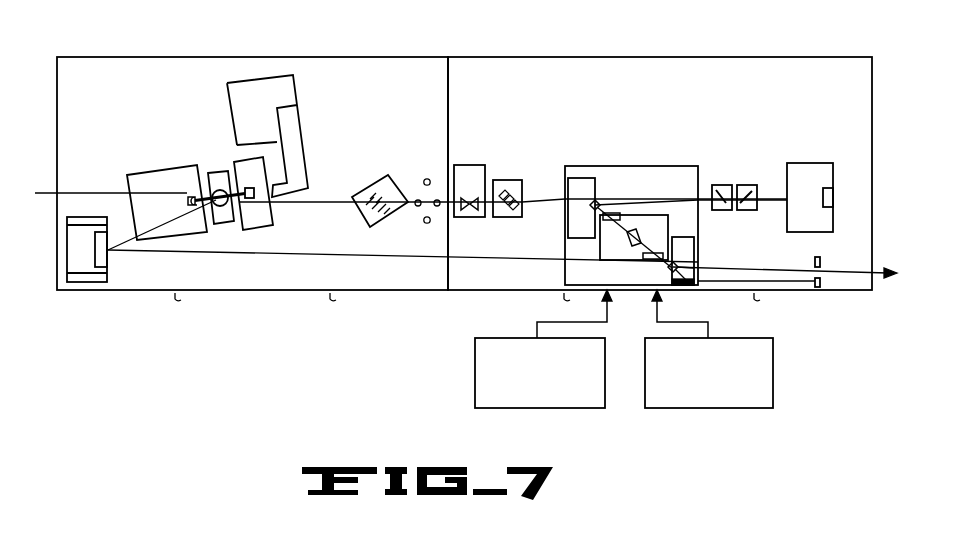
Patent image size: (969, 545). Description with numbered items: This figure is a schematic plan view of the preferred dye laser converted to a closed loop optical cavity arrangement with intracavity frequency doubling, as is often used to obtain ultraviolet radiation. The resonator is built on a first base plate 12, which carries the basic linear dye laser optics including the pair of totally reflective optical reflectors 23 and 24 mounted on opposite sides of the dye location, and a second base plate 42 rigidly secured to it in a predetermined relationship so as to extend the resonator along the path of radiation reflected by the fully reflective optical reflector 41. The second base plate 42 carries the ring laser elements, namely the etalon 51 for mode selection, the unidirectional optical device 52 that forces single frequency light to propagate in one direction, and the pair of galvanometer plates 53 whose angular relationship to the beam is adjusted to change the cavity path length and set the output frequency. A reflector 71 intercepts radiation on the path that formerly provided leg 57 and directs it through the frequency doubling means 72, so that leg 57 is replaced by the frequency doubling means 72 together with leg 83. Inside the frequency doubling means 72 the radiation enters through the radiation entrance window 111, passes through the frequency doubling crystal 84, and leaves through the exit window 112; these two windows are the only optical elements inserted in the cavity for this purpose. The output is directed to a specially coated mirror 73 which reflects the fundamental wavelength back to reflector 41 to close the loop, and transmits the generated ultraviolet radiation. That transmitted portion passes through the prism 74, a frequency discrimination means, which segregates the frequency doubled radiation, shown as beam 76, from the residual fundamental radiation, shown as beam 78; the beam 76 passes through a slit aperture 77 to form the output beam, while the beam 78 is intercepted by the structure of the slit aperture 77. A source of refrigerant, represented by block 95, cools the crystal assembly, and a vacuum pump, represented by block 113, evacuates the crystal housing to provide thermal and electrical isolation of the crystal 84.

The first base plate 12 is at (413, 108).
The second base plate 42 is at (505, 108).
The optical reflector 23 is at (248, 188).
The optical reflector 24 is at (186, 202).
The fully reflective optical reflector 41 is at (108, 257).
The leg 83 is at (308, 258).
The etalon 51 is at (473, 171).
The unidirectional optical device 52 is at (508, 181).
The leg 57 is at (542, 194).
The reflector 71 is at (590, 206).
The frequency doubling means 72 is at (704, 160).
The radiation entrance window 111 is at (611, 213).
The galvanometer plates 53 is at (740, 185).
The frequency doubling crystal 84 is at (628, 238).
The specially coated mirror 73 is at (698, 261).
The beam 76 is at (770, 273).
The slit aperture 77 is at (822, 260).
The prism 74 is at (694, 291).
The beam 78 is at (795, 282).
The exit window 112 is at (648, 260).
The source of refrigerant 95 is at (478, 352).
The vacuum pump 113 is at (770, 353).